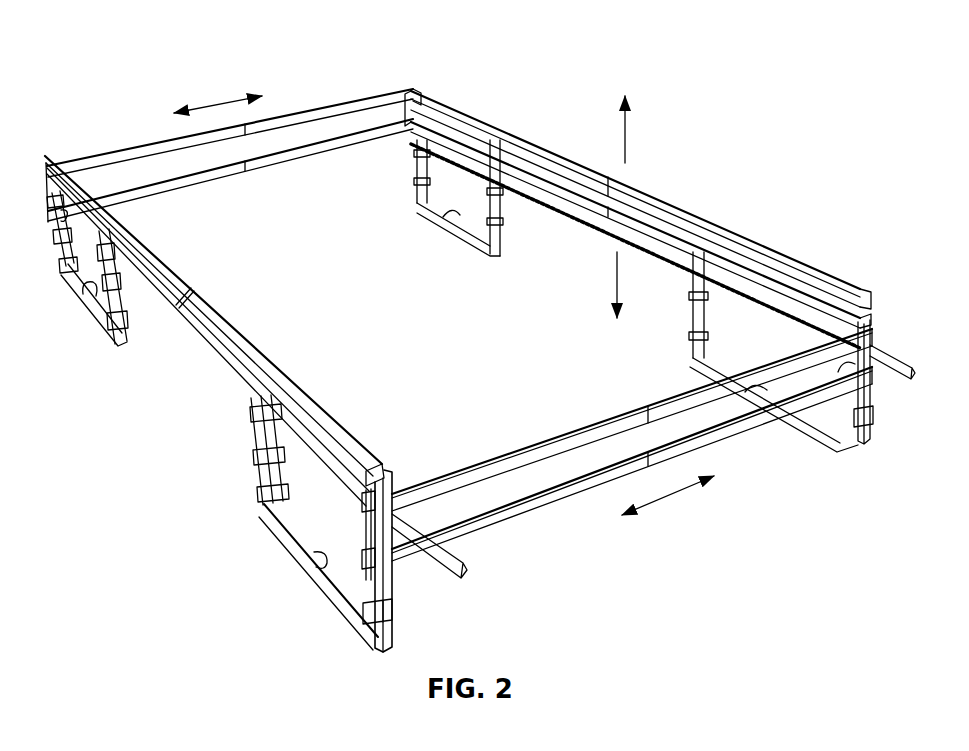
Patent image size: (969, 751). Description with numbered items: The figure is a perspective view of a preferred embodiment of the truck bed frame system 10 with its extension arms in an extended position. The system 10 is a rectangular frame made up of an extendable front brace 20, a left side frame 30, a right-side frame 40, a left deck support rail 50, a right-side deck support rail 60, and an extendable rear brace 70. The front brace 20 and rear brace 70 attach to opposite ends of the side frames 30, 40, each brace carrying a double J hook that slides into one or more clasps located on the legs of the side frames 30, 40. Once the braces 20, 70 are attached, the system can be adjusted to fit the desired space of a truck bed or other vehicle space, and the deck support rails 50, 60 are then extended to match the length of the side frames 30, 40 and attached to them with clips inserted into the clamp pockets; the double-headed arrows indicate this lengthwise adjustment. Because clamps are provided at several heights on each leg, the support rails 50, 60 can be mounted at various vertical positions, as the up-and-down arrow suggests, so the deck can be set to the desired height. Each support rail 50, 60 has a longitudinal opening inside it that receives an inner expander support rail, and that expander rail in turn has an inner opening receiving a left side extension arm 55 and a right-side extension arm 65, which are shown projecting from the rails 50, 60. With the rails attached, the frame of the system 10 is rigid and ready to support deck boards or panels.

The truck bed frame system 10 is at (733, 120).
The front brace 20 is at (307, 104).
The left side frame 30 is at (94, 319).
The right-side frame 40 is at (540, 148).
The left deck support rail 50 is at (222, 314).
The left side extension arm 55 is at (472, 572).
The right-side deck support rail 60 is at (560, 214).
The right-side extension arm 65 is at (905, 352).
The rear brace 70 is at (536, 440).